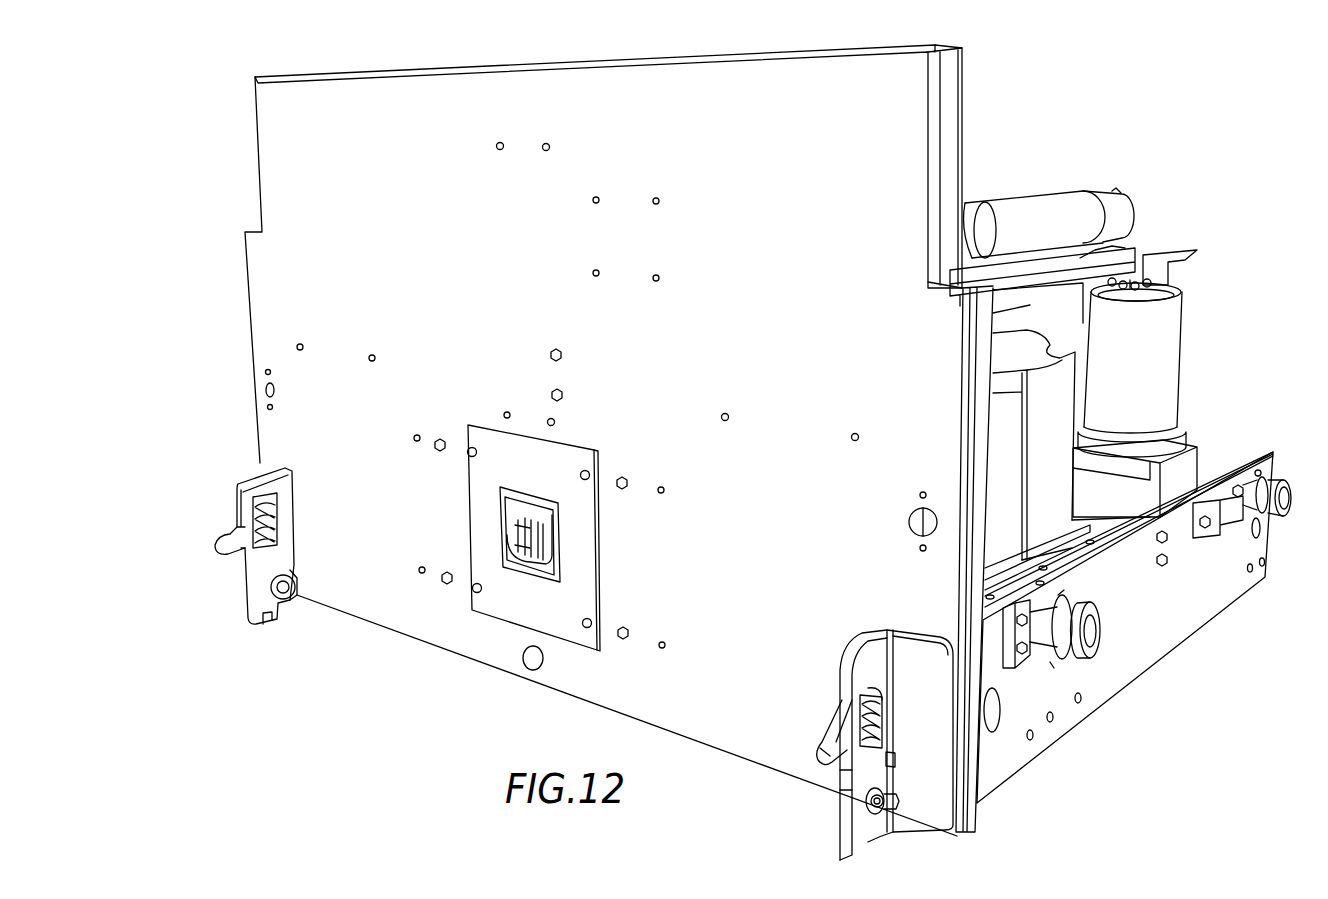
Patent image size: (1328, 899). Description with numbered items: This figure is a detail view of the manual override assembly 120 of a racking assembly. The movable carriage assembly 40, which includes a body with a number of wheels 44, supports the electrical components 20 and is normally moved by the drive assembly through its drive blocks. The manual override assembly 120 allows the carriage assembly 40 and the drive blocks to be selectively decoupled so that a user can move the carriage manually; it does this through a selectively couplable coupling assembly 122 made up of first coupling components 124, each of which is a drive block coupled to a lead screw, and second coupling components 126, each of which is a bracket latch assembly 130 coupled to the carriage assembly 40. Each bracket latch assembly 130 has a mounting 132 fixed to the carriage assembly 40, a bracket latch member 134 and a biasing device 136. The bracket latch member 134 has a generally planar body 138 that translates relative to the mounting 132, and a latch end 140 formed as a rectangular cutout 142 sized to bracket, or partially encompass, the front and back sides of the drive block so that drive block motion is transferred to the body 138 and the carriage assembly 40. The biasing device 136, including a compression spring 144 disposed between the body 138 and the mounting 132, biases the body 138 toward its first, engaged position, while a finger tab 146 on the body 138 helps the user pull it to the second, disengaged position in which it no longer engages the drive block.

The electrical components 20 is at (1206, 350).
The carriage assembly 40 is at (230, 74).
The wheels 44 is at (1290, 510).
The manual override assembly 120 is at (292, 460).
The selectively couplable coupling assembly 122 is at (297, 515).
The first coupling component 124 is at (968, 830).
The second coupling component 126 is at (845, 815).
The bracket latch assembly 130 is at (830, 845).
The mounting 132 is at (915, 650).
The bracket latch member 134 is at (843, 778).
The biasing device 136 is at (890, 707).
The body 138 is at (842, 835).
The latch end 140 is at (886, 808).
The rectangular cutout 142 is at (863, 842).
The compression spring 144 is at (893, 748).
The finger tab 146 is at (817, 740).